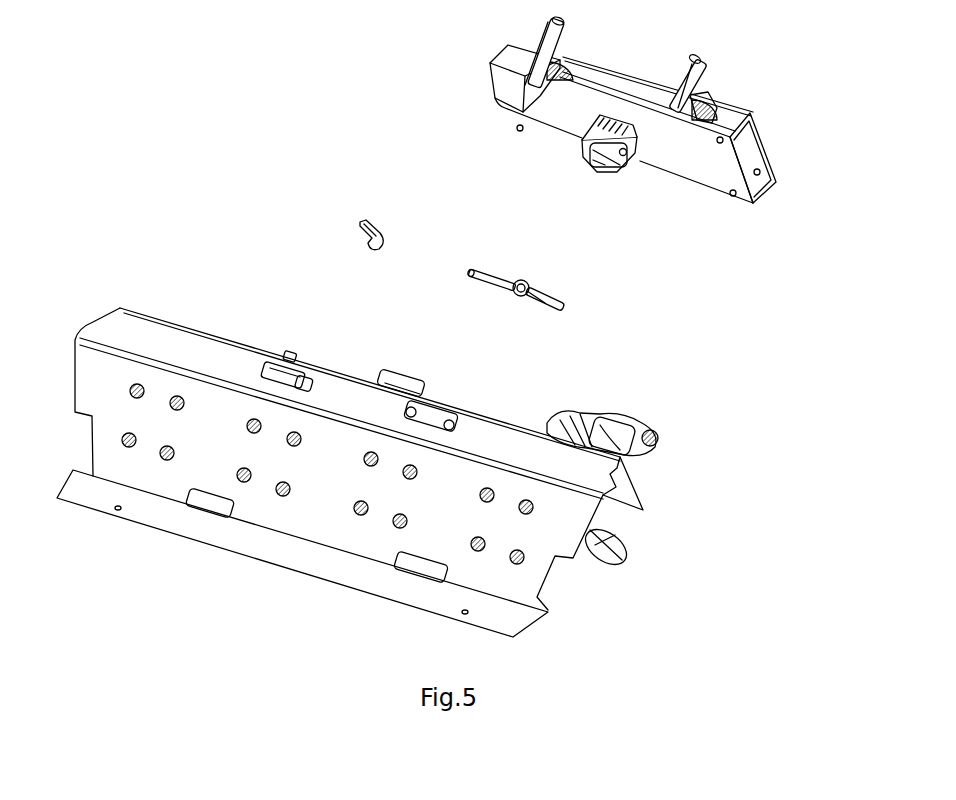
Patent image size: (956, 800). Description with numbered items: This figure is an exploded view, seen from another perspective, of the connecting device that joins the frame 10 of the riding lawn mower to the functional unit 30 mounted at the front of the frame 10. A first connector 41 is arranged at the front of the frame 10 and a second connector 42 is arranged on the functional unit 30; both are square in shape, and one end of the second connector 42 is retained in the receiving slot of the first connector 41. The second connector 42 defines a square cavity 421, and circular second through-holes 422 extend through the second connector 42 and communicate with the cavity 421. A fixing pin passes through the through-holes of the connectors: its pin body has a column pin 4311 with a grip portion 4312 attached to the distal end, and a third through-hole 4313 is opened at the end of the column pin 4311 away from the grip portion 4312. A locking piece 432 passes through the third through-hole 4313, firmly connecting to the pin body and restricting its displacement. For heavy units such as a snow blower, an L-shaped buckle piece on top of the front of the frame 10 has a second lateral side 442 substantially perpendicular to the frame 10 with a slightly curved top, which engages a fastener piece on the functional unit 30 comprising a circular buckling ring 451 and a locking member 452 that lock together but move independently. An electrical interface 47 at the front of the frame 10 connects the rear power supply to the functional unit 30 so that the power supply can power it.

The frame 10 is at (307, 552).
The functional unit 30 is at (634, 109).
The first connector 41 is at (400, 373).
The second connector 42 is at (611, 120).
The cavity 421 is at (597, 167).
The second through-holes 422 is at (624, 156).
The locking piece 432 is at (358, 243).
The second lateral side 442 is at (290, 350).
The buckling ring 451 is at (492, 83).
The locking member 452 is at (703, 73).
The column pin 4311 is at (498, 281).
The grip portion 4312 is at (565, 297).
The third through-hole 4313 is at (476, 269).
The electrical interface 47 is at (620, 417).